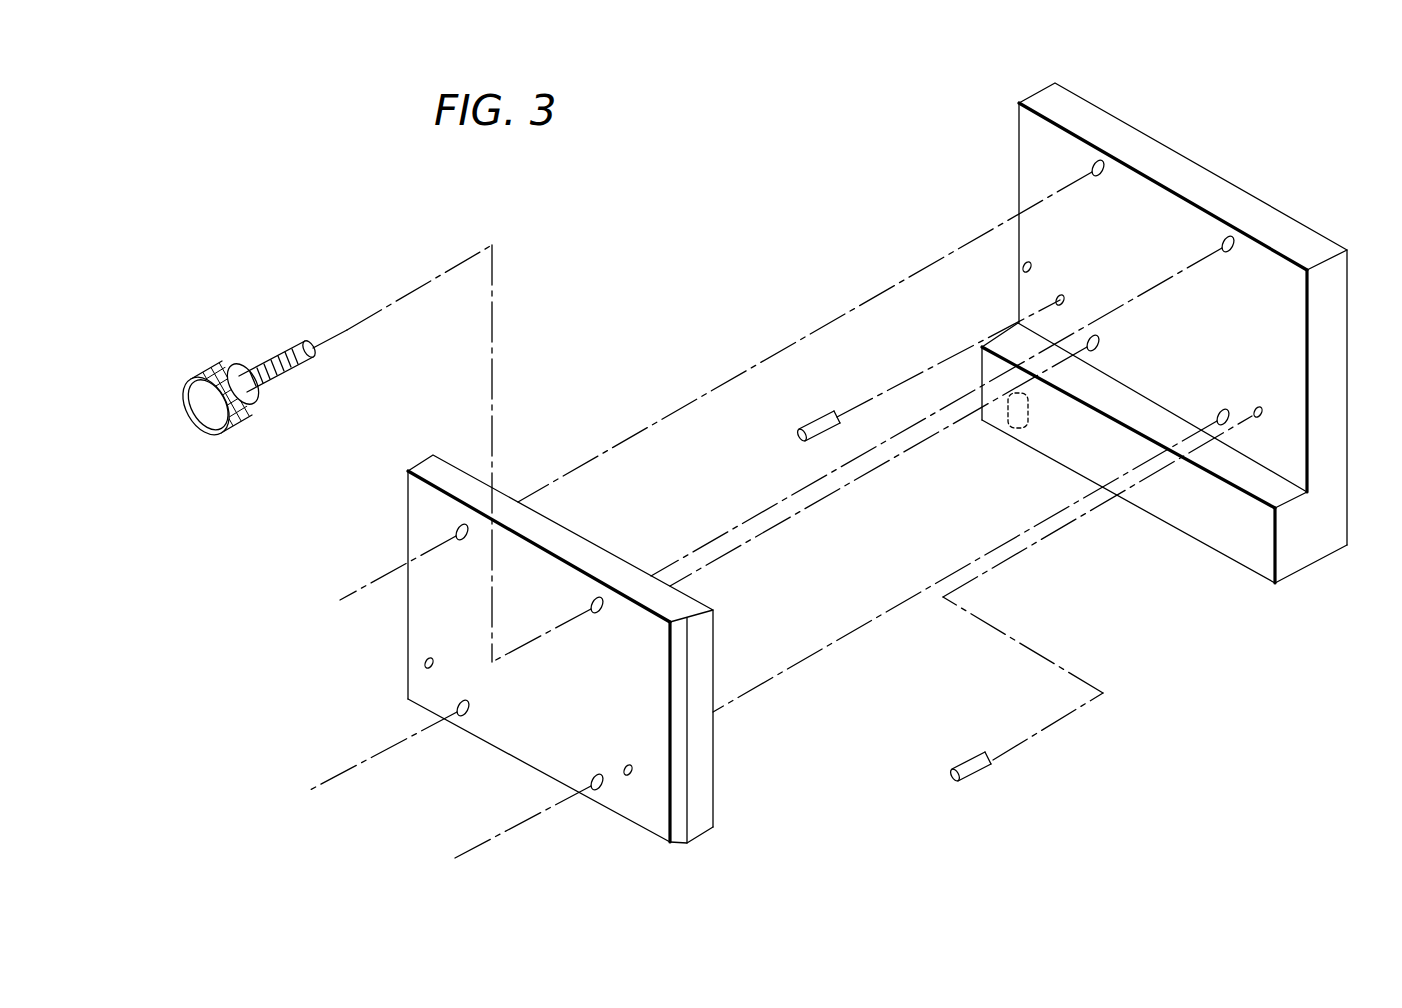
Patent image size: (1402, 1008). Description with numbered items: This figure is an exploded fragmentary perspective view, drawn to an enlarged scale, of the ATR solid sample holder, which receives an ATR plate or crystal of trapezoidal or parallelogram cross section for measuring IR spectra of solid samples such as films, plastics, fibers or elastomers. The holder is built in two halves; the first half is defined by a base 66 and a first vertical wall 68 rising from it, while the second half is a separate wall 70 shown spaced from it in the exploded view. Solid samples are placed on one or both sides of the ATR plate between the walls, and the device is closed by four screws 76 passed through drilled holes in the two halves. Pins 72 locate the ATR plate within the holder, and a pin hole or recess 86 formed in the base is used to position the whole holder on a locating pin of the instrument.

The base 66 is at (1197, 506).
The first vertical wall 68 is at (1040, 97).
The front plate 70 is at (700, 813).
The pin 72 is at (822, 427).
The screw 76 is at (203, 374).
The pin hole or recess 86 is at (1012, 430).